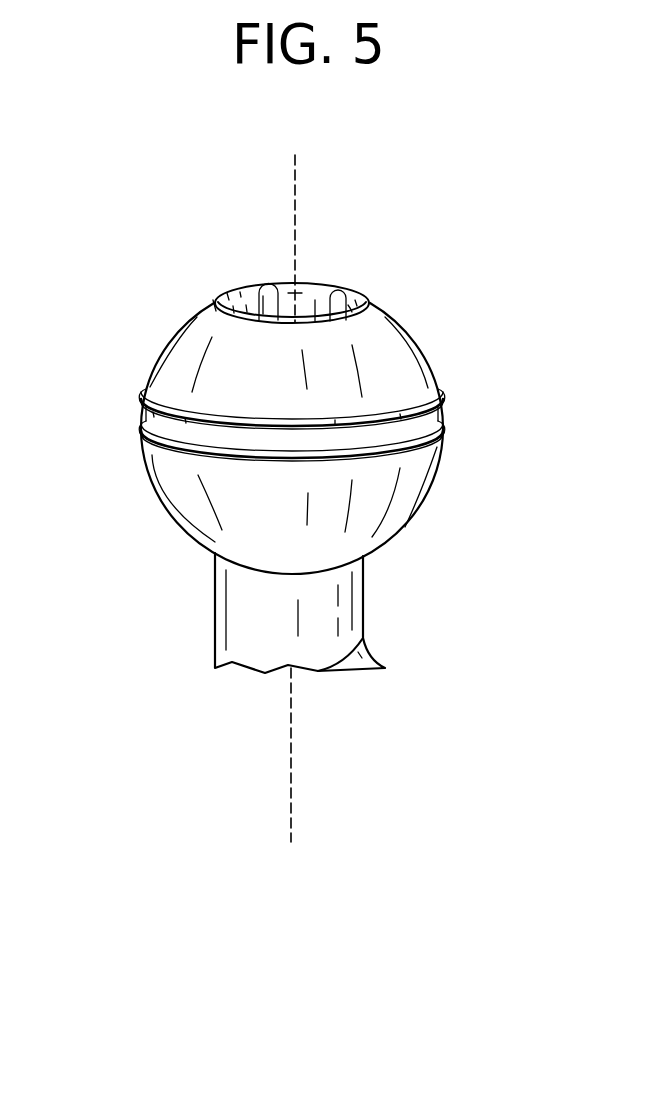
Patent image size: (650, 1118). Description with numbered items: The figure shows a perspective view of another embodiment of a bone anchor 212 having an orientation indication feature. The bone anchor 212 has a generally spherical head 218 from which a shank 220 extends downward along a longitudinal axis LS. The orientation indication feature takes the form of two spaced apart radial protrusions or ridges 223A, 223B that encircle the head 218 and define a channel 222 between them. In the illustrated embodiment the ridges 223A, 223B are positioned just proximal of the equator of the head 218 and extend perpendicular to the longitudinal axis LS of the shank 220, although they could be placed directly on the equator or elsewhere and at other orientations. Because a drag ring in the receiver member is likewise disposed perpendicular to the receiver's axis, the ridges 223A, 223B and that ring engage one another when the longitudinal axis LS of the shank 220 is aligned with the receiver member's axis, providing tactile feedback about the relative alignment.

The bone anchor 212 is at (118, 338).
The head 218 is at (223, 508).
The shank 220 is at (325, 607).
The channel 222 is at (167, 428).
The ridge 223A is at (414, 388).
The ridge 223B is at (412, 444).
The longitudinal axis LS is at (309, 498).